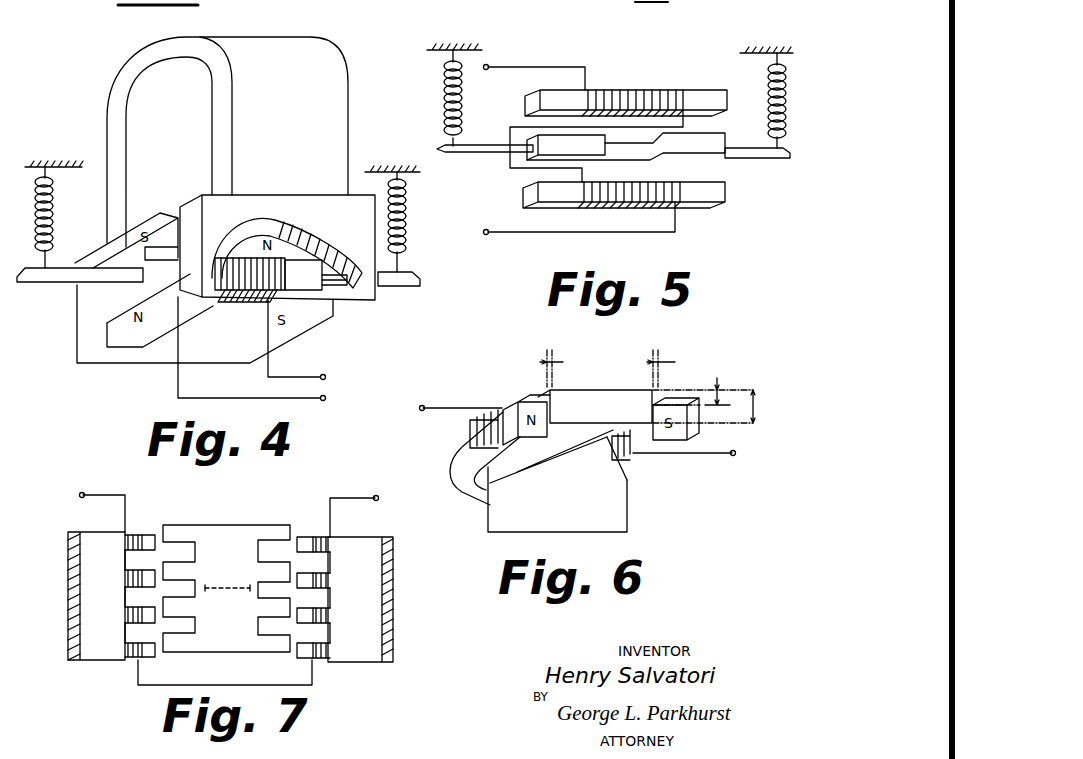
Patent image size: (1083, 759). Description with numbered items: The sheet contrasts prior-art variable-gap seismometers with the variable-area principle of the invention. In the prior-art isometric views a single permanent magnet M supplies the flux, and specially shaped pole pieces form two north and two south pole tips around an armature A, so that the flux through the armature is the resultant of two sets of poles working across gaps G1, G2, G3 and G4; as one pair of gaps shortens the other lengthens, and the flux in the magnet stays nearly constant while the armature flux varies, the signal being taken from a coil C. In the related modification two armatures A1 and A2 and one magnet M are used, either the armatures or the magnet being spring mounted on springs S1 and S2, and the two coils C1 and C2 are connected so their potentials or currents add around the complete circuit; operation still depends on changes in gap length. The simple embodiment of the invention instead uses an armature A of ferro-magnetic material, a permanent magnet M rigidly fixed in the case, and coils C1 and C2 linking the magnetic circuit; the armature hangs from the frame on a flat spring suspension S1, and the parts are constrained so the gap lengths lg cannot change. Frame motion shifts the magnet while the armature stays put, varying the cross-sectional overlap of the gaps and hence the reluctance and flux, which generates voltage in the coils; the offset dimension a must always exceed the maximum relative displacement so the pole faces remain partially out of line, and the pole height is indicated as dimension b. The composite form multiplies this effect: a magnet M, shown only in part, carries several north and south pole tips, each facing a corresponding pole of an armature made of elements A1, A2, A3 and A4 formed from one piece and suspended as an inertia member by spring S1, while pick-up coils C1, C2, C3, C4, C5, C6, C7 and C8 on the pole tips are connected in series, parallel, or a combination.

In FIG. 4, the permanent magnet M is at (335, 93).
In FIG. 5, the permanent magnet M is at (725, 140).
In FIG. 6, the permanent magnet M is at (585, 485).
In FIG. 7, the permanent magnet M is at (403, 585).
In FIG. 4, the spring suspension S1 is at (53, 190).
In FIG. 5, the spring suspension S1 is at (444, 110).
In FIG. 6, the spring suspension S1 is at (517, 472).
In FIG. 7, the spring suspension S1 is at (226, 586).
In FIG. 4, the spring / spring suspension S2 is at (407, 228).
In FIG. 5, the spring / spring suspension S2 is at (770, 82).
In FIG. 4, the armature A is at (140, 293).
In FIG. 5, the armature A is at (613, 151).
In FIG. 6, the armature A is at (593, 403).
In FIG. 7, the armature A is at (220, 540).
In FIG. 5, the armature A1 is at (697, 97).
In FIG. 7, the armature A1 is at (182, 533).
In FIG. 5, the armature A2 is at (718, 197).
In FIG. 7, the armature A2 is at (268, 568).
In FIG. 7, the armature element A3 is at (190, 614).
In FIG. 7, the armature element A4 is at (183, 643).
In FIG. 4, the coil C is at (235, 300).
In FIG. 5, the coil C1 is at (612, 88).
In FIG. 6, the coil C1 is at (475, 427).
In FIG. 7, the coil C1 is at (128, 544).
In FIG. 5, the coil C2 is at (628, 212).
In FIG. 6, the coil C2 is at (650, 460).
In FIG. 7, the coil C2 is at (128, 578).
In FIG. 7, the pick-up coil C3 is at (128, 613).
In FIG. 7, the coil C4 is at (132, 658).
In FIG. 7, the coil C5 is at (320, 545).
In FIG. 7, the coil C6 is at (320, 580).
In FIG. 7, the coil C7 is at (320, 617).
In FIG. 7, the coil C8 is at (322, 657).
In FIG. 4, the air gap G1 is at (140, 257).
In FIG. 5, the air gap G1 is at (540, 120).
In FIG. 7, the air gap G1 is at (160, 533).
In FIG. 4, the air gap G2 is at (128, 303).
In FIG. 5, the air gap G2 is at (527, 173).
In FIG. 7, the air gap G2 is at (295, 535).
In FIG. 4, the air gap G3 is at (303, 252).
In FIG. 5, the air gap G3 is at (707, 125).
In FIG. 4, the air gap G4 is at (305, 290).
In FIG. 5, the air gap G4 is at (713, 173).
In FIG. 6, the air gap length lg is at (615, 368).
In FIG. 6, the dimension a is at (703, 393).
In FIG. 6, the dimension b is at (745, 406).